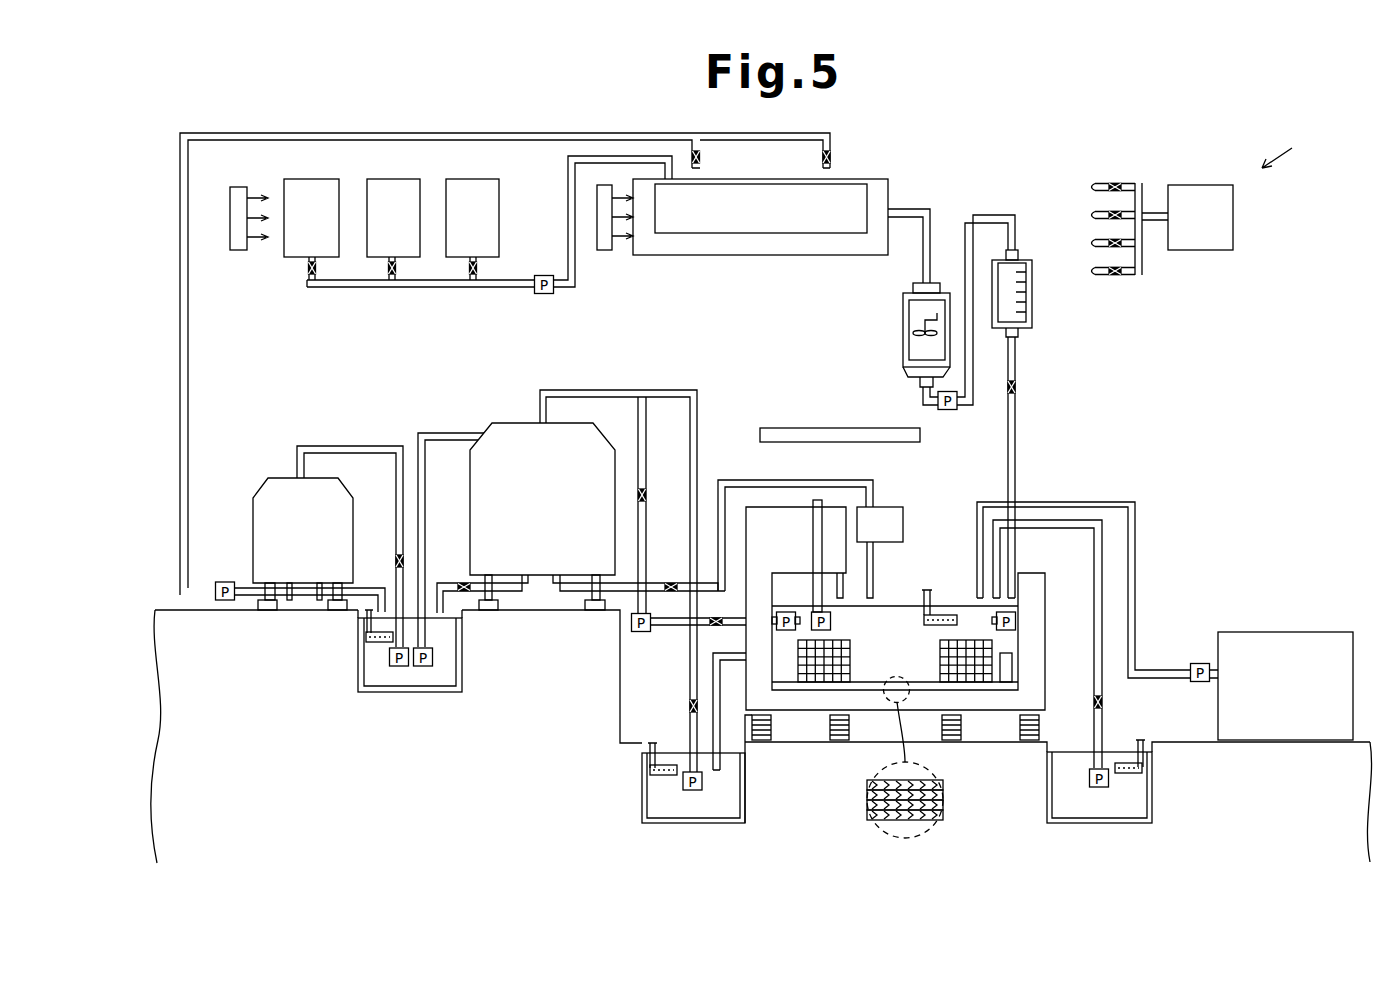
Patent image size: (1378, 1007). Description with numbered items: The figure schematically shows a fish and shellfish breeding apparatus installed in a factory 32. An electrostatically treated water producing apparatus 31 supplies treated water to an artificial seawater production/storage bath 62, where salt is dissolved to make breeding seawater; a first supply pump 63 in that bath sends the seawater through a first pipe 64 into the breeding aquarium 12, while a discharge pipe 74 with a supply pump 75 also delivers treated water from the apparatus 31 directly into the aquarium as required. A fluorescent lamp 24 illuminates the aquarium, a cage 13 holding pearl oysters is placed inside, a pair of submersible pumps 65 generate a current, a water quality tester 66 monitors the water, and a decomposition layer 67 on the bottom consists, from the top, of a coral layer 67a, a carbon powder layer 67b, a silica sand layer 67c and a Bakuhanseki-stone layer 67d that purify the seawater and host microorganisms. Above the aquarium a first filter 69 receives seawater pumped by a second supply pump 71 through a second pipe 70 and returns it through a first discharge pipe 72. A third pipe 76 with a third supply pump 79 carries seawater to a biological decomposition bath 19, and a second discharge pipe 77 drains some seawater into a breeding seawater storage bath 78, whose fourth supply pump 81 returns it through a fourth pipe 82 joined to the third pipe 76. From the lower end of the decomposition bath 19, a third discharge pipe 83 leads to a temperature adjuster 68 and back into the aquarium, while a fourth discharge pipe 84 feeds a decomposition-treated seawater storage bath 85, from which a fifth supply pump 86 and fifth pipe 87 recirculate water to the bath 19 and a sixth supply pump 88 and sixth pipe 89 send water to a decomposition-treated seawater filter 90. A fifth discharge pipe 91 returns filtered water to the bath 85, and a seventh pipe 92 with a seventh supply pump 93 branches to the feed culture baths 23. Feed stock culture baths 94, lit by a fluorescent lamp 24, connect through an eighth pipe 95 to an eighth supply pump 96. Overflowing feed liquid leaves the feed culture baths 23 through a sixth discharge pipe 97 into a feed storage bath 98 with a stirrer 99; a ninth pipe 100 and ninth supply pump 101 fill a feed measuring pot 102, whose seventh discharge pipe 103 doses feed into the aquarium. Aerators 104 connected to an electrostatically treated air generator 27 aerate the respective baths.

The breeding aquarium 12 is at (1030, 572).
The cage 13 is at (850, 645).
The biological decomposition bath 19 is at (503, 423).
The feed culture bath 23 is at (740, 255).
The fluorescent lamp 24 is at (238, 187).
The electrostatically treated air generator 27 is at (1205, 185).
The electrostatically treated water producing apparatus 31 is at (1268, 632).
The factory 32 is at (1330, 157).
The artificial seawater production/storage bath 62 is at (1152, 795).
The first supply pump 63 is at (1100, 788).
The first pipe 64 is at (1098, 690).
The submersible pump 65 is at (790, 612).
The water quality tester 66 is at (1005, 682).
The decomposition layer 67 is at (975, 690).
The coral layer 67a is at (867, 783).
The carbon powder layer 67b is at (867, 795).
The silica sand layer 67c is at (870, 808).
The Bakuhanseki-stone layer 67d is at (873, 820).
The temperature adjuster 68 is at (903, 505).
The first filter 69 is at (760, 507).
The second pipe 70 is at (813, 580).
The second supply pump 71 is at (830, 620).
The first discharge pipe 72 is at (845, 588).
The discharge pipe 74 is at (1165, 670).
The supply pump 75 is at (1200, 663).
The third pipe 76 is at (670, 625).
The second discharge pipe 77 is at (715, 775).
The breeding seawater storage bath 78 is at (642, 812).
The third supply pump 79 is at (632, 625).
The fourth supply pump 81 is at (690, 793).
The fourth pipe 82 is at (700, 397).
The third discharge pipe 83 is at (558, 592).
The fourth discharge pipe 84 is at (508, 592).
The decomposition-treated seawater storage bath 85 is at (462, 682).
The fifth supply pump 86 is at (424, 667).
The fifth pipe 87 is at (445, 433).
The sixth supply pump 88 is at (399, 667).
The sixth pipe 89 is at (317, 446).
The decomposition-treated seawater filter 90 is at (272, 478).
The fifth discharge pipe 91 is at (317, 600).
The seventh pipe 92 is at (247, 600).
The seventh supply pump 93 is at (228, 582).
The feed stock culture bath 94 is at (473, 179).
The eighth pipe 95 is at (433, 287).
The eighth supply pump 96 is at (546, 293).
The sixth discharge pipe 97 is at (912, 209).
The feed storage bath 98 is at (903, 308).
The stirrer 99 is at (915, 335).
The ninth pipe 100 is at (990, 215).
The ninth supply pump 101 is at (950, 409).
The feed measuring pot 102 is at (1032, 312).
The seventh discharge pipe 103 is at (1015, 415).
The aerator 104 is at (372, 645).